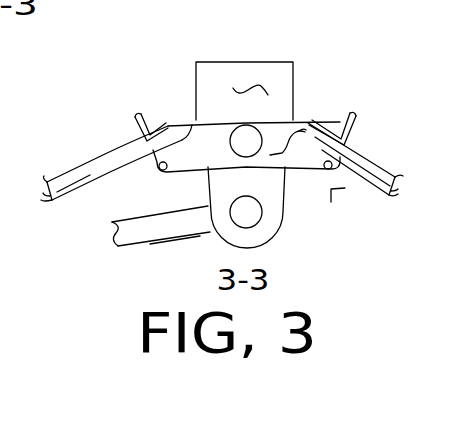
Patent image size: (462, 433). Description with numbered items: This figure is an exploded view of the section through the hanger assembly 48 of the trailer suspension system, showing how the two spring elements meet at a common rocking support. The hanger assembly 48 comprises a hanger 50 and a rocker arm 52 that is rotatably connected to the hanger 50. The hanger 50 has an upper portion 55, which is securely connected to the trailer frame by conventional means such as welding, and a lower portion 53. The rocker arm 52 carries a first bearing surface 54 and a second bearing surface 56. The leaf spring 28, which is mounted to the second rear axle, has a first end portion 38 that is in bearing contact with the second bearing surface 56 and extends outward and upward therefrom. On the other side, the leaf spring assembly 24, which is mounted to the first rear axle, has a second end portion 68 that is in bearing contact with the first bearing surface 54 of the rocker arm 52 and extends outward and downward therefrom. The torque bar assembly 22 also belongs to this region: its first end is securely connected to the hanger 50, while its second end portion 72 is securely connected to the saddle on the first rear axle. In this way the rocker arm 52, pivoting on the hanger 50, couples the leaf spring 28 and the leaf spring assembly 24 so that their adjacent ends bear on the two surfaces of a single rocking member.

The torque bar assembly 22 is at (112, 230).
The leaf spring assembly 24 is at (72, 167).
The leaf spring 28 is at (377, 162).
The first end portion 38 is at (308, 121).
The hanger assembly 48 is at (331, 189).
The hanger 50 is at (250, 79).
The rocker arm 52 is at (289, 152).
The lower portion 53 is at (263, 245).
The first bearing surface 54 is at (156, 119).
The upper portion 55 is at (223, 62).
The second bearing surface 56 is at (340, 121).
The second end portion 68 is at (155, 152).
The second end portion 72 is at (155, 241).